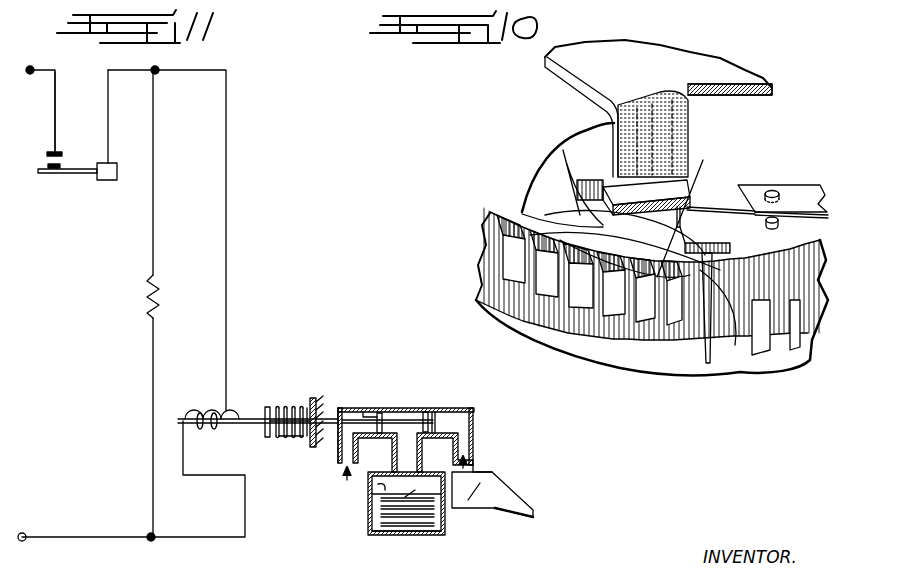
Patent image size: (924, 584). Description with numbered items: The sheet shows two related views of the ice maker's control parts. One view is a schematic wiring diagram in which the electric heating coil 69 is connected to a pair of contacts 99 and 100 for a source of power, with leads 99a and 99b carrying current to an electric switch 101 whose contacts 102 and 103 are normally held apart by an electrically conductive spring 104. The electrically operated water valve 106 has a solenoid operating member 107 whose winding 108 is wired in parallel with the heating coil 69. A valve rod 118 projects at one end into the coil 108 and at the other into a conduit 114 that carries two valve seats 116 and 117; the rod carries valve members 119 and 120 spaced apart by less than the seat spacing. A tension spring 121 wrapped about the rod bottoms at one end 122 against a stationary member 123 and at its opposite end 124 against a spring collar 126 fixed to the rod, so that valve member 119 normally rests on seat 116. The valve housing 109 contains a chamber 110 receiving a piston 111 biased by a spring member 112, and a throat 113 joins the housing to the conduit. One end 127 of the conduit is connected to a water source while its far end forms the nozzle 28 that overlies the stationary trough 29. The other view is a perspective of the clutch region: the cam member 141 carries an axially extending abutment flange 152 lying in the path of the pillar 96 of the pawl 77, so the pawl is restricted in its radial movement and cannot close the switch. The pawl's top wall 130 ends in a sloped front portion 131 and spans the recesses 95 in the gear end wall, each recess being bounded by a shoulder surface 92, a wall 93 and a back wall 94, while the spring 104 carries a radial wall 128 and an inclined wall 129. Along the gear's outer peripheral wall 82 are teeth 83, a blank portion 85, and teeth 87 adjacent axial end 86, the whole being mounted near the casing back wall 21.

In FIG. 11, the contact 99 is at (32, 68).
In FIG. 11, the lead 99a is at (58, 93).
In FIG. 11, the lead 99b is at (108, 112).
In FIG. 11, the electric contact 102 is at (58, 152).
In FIG. 10, the electric contact 102 is at (778, 191).
In FIG. 11, the electric contact 103 is at (53, 170).
In FIG. 10, the electric contact 103 is at (778, 218).
In FIG. 11, the electrically conductive spring 104 is at (78, 174).
In FIG. 10, the electrically conductive spring 104 is at (733, 214).
In FIG. 11, the electric switch 101 is at (117, 176).
In FIG. 11, the electric heating coil 69 is at (160, 292).
In FIG. 11, the contact 100 is at (27, 533).
In FIG. 11, the electric solenoid operating member 107 is at (237, 426).
In FIG. 11, the electric coil 108 is at (193, 410).
In FIG. 11, the opposite end of tension spring 124 is at (269, 407).
In FIG. 11, the spring collar 126 is at (264, 412).
In FIG. 11, the tension spring 121 is at (291, 406).
In FIG. 11, the end of tension spring 122 is at (310, 434).
In FIG. 11, the stationary member 123 is at (317, 398).
In FIG. 11, the end of conduit 127 is at (337, 463).
In FIG. 11, the valve rod 118 is at (327, 420).
In FIG. 11, the conduit 114 is at (472, 412).
In FIG. 11, the valve seat 116 is at (373, 412).
In FIG. 11, the valve seat 117 is at (448, 412).
In FIG. 11, the valve member 119 is at (381, 413).
In FIG. 11, the valve member 120 is at (426, 412).
In FIG. 11, the throat 113 is at (390, 455).
In FIG. 11, the electrically operated water valve 106 is at (378, 490).
In FIG. 11, the valve housing 109 is at (376, 517).
In FIG. 11, the piston 111 is at (417, 483).
In FIG. 11, the spring member 112 is at (402, 534).
In FIG. 11, the stationary trough 29 is at (528, 512).
In FIG. 11, the nozzle 28 is at (468, 455).
In FIG. 11, the chamber 110 is at (466, 462).
In FIG. 10, the cam member 141 is at (587, 62).
In FIG. 10, the abutment flange 152 is at (616, 125).
In FIG. 10, the pillar 96 is at (694, 117).
In FIG. 10, the top wall 130 is at (548, 173).
In FIG. 10, the front portion 131 is at (574, 214).
In FIG. 10, the pawl 77 is at (691, 215).
In FIG. 10, the wall 93 is at (680, 227).
In FIG. 10, the radial wall 128 is at (704, 260).
In FIG. 10, the back wall 94 is at (694, 280).
In FIG. 10, the blank portion 85 is at (800, 277).
In FIG. 10, the back wall 21 is at (612, 350).
In FIG. 10, the outer peripheral wall 82 is at (540, 306).
In FIG. 10, the gear teeth 83 is at (575, 319).
In FIG. 10, the axial end 86 is at (593, 334).
In FIG. 10, the inclined wall 129 is at (636, 302).
In FIG. 10, the recess 95 is at (656, 322).
In FIG. 10, the shoulder surface 92 is at (748, 330).
In FIG. 10, the gear teeth 87 is at (790, 345).